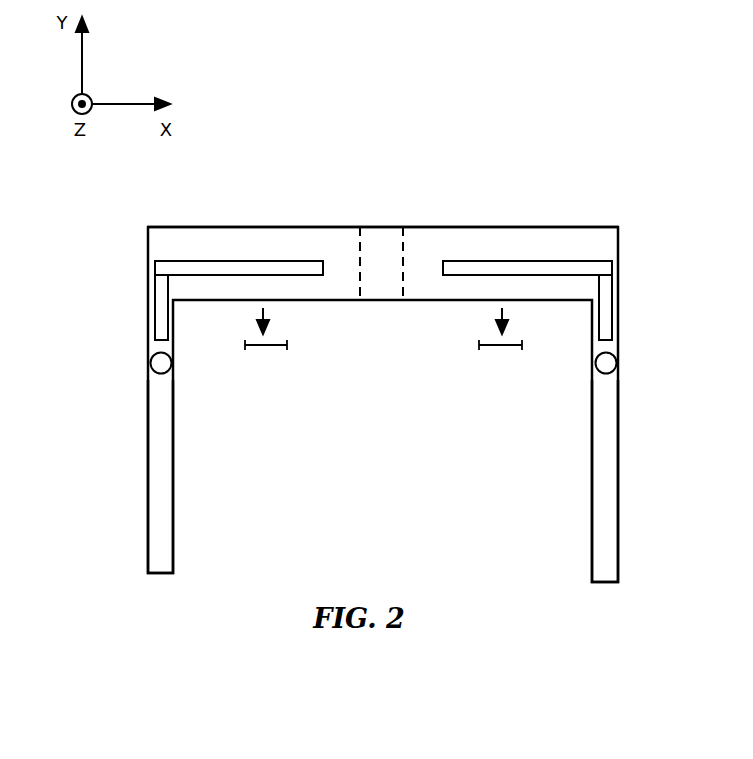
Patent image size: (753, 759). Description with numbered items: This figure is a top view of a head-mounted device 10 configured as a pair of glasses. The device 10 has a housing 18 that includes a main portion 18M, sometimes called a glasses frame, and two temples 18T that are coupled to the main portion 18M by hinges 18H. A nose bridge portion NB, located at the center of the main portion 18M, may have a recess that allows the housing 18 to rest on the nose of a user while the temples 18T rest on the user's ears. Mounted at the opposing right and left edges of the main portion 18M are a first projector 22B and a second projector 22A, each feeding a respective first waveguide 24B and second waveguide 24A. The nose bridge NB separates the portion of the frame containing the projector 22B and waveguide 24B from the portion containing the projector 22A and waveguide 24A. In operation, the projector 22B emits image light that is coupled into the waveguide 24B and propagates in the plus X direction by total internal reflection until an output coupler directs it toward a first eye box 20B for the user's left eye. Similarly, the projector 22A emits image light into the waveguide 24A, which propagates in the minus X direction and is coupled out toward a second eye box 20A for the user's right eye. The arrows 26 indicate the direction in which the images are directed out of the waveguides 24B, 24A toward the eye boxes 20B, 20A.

The device 10 is at (584, 114).
The housing 18 is at (88, 324).
The main portion 18M is at (148, 245).
The temples 18T is at (158, 515).
The hinges 18H is at (163, 362).
The second projector 22A is at (604, 320).
The first projector 22B is at (163, 318).
The second waveguide 24A is at (518, 270).
The first waveguide 24B is at (262, 270).
The arrows 26 is at (268, 315).
The second eye box 20A is at (476, 345).
The first eye box 20B is at (290, 345).
The nose bridge portion NB is at (358, 220).